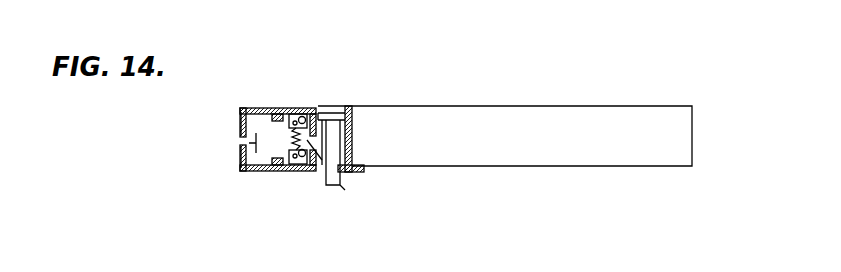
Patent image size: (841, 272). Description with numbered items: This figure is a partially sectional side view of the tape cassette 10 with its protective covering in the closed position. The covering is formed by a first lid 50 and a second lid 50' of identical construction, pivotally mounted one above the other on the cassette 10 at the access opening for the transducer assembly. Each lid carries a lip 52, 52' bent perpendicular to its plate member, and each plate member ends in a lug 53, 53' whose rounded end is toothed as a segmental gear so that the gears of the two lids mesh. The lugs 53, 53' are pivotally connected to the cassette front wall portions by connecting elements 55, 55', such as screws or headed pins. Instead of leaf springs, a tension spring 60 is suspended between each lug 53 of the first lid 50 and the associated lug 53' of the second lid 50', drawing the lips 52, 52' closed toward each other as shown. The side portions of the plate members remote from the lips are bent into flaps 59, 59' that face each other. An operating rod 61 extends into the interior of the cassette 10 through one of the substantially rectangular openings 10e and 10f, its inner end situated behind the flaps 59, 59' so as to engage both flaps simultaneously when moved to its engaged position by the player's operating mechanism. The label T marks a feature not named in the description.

The tape cassette 10 is at (668, 100).
The rectangular opening 10e is at (333, 113).
The rectangular opening 10f is at (360, 178).
The operating rod 61 is at (338, 140).
The first lid 50 is at (261, 123).
The second lid 50' is at (262, 205).
The lip 52 is at (198, 118).
The lip 52' is at (198, 182).
The terminal T is at (243, 143).
The lug 53 is at (286, 88).
The lug 53' is at (303, 198).
The connecting element 55 is at (314, 92).
The connecting element 55' is at (331, 194).
The tension spring 60 is at (288, 135).
The flap 59 is at (396, 84).
The flap 59' is at (378, 206).